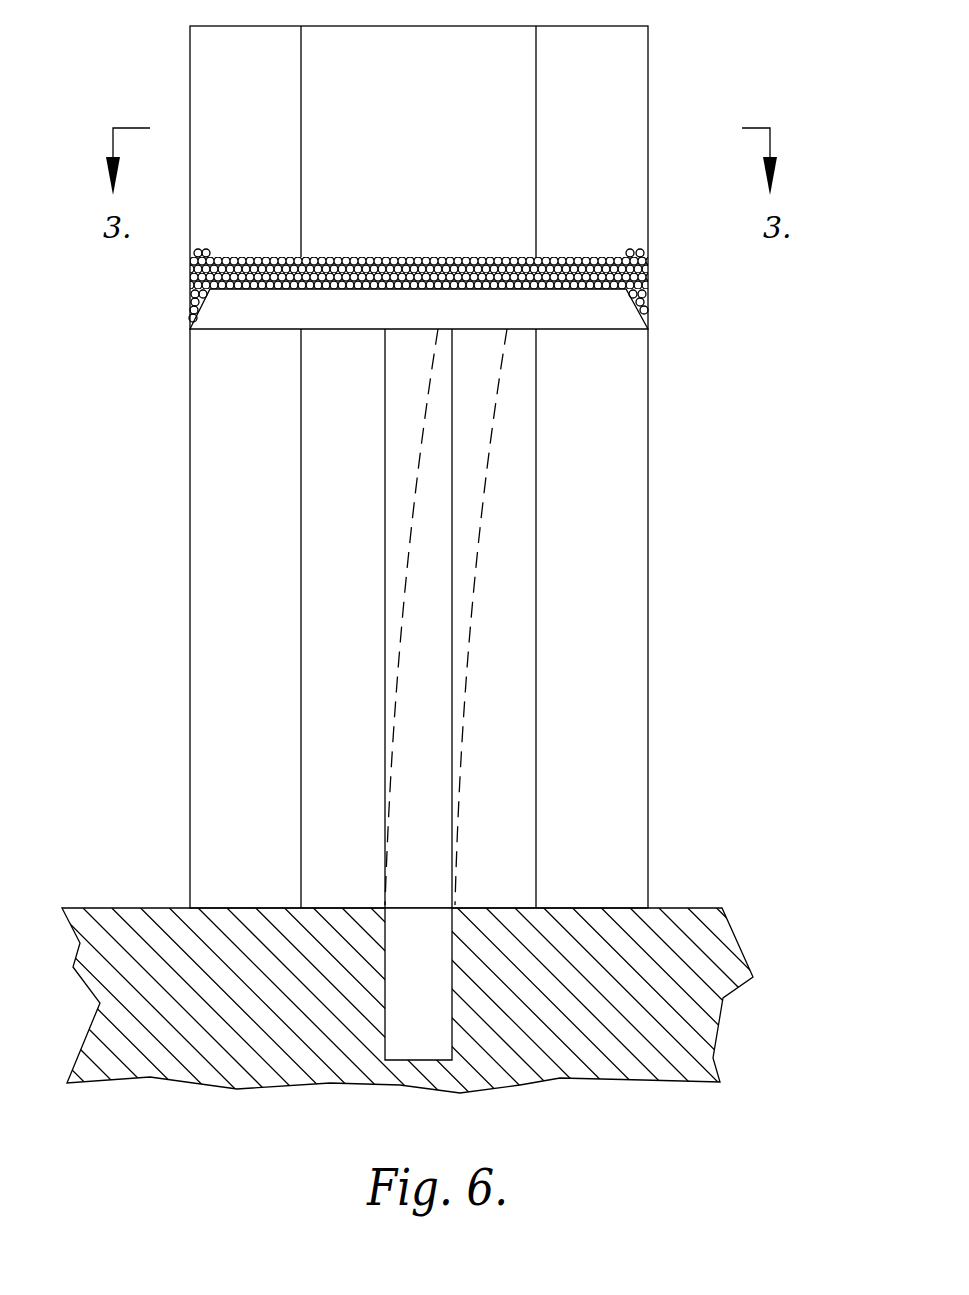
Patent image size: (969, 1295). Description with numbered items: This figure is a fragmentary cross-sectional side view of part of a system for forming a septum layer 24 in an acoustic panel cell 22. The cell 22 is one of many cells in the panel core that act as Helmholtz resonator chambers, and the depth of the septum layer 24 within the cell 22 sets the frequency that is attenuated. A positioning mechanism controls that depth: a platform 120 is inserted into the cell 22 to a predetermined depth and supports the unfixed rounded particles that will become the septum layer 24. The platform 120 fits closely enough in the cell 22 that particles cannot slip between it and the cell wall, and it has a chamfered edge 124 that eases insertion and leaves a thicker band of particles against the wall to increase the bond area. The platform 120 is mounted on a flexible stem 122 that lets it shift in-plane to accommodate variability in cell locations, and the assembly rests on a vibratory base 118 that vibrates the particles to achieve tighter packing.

The cell 22 is at (593, 85).
The septum layer 24 is at (583, 257).
The chamfered edge 124 is at (646, 306).
The platform 120 is at (567, 313).
The stem 122 is at (475, 598).
The vibratory base 118 is at (147, 925).